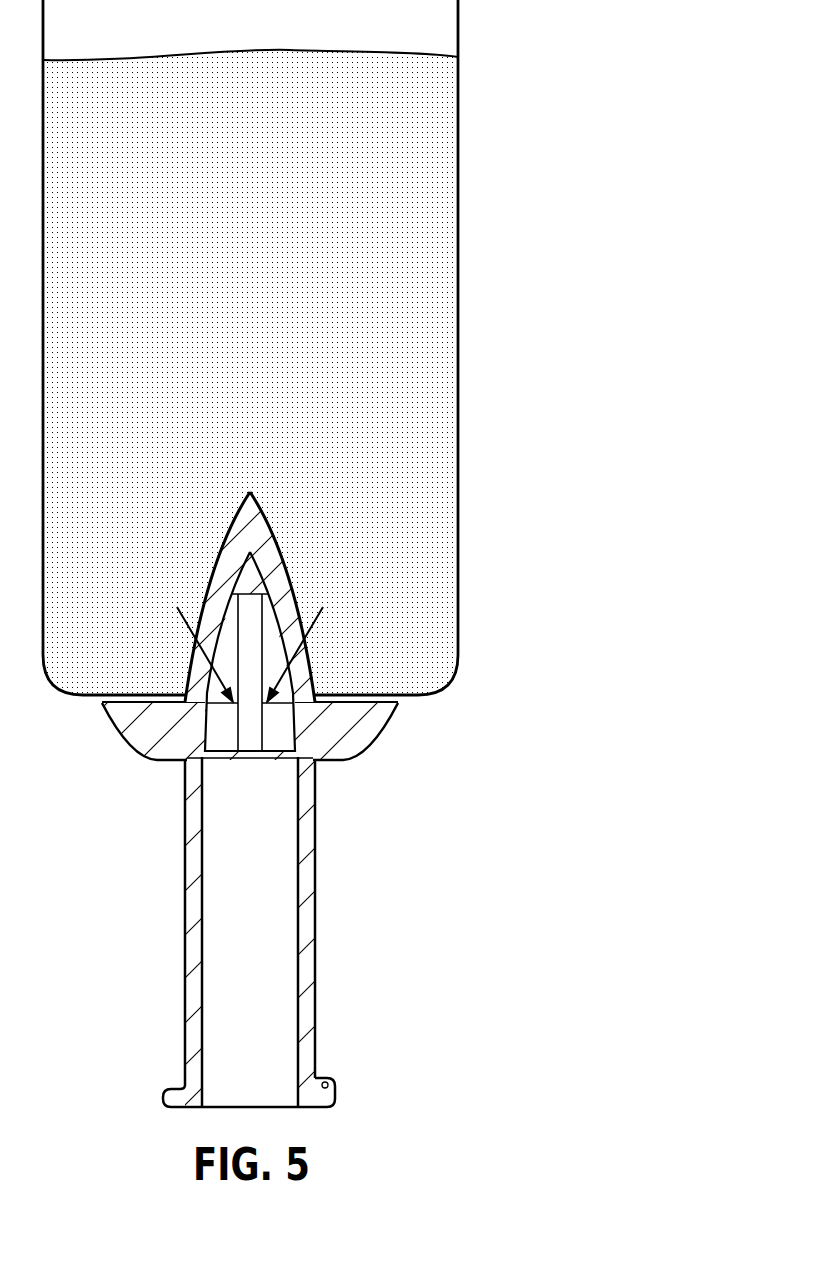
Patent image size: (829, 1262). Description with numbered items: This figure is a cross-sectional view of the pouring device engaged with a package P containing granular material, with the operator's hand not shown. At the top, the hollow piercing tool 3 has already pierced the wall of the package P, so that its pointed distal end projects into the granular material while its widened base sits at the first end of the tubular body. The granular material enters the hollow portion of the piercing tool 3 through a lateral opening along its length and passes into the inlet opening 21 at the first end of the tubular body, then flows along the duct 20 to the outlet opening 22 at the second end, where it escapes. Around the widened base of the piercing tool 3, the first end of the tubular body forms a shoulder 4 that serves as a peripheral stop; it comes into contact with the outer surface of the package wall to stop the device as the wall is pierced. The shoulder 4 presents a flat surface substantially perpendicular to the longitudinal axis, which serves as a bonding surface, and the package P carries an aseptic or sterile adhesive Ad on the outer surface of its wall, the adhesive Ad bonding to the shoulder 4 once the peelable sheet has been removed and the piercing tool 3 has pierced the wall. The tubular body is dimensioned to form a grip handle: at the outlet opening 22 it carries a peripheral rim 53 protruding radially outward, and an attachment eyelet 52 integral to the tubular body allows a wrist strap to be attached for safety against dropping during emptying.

The package P is at (458, 140).
The hollow piercing tool 3 is at (253, 548).
The adhesive Ad is at (398, 702).
The shoulder 4 is at (370, 727).
The inlet opening 21 is at (313, 760).
The duct 20 is at (277, 905).
The outlet opening 22 is at (278, 1107).
The attachment eyelet 52 is at (183, 1108).
The peripheral rim 53 is at (335, 1080).